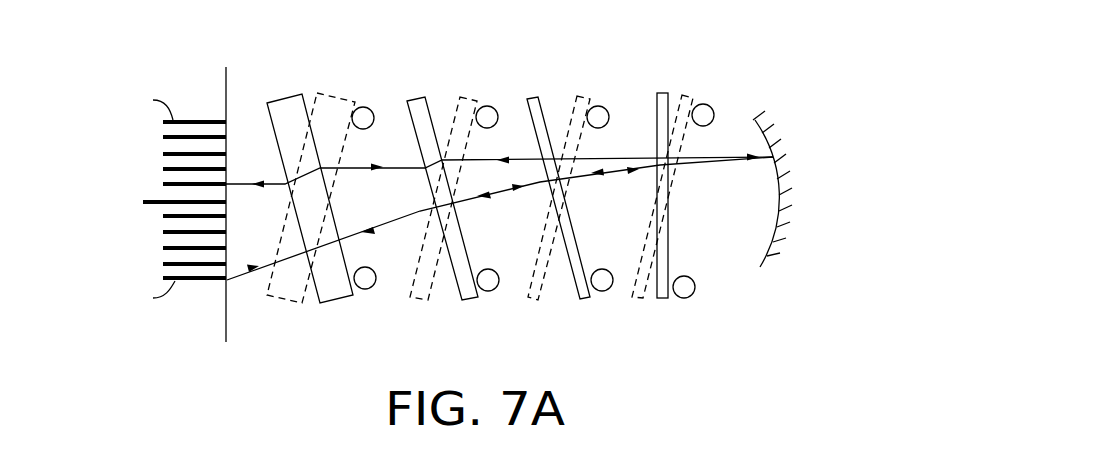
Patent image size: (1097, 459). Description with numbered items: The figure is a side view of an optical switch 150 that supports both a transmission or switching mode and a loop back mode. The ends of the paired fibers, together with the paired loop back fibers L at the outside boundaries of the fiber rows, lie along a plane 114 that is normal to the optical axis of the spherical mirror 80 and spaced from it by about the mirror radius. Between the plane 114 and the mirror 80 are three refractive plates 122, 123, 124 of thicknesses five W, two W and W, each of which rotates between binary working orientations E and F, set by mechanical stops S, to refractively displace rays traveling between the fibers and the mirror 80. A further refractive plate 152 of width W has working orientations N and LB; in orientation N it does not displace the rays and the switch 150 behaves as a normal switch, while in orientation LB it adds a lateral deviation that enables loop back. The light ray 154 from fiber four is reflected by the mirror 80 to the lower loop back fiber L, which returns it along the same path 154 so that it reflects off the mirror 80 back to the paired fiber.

The plane 114 is at (226, 95).
The light ray 154 is at (285, 183).
The plate 122 is at (282, 303).
The plate 123 is at (475, 302).
The plate 124 is at (533, 302).
The refractive plate 152 is at (670, 302).
The spherical mirror 80 is at (758, 264).
The optical switch 150 is at (626, 40).